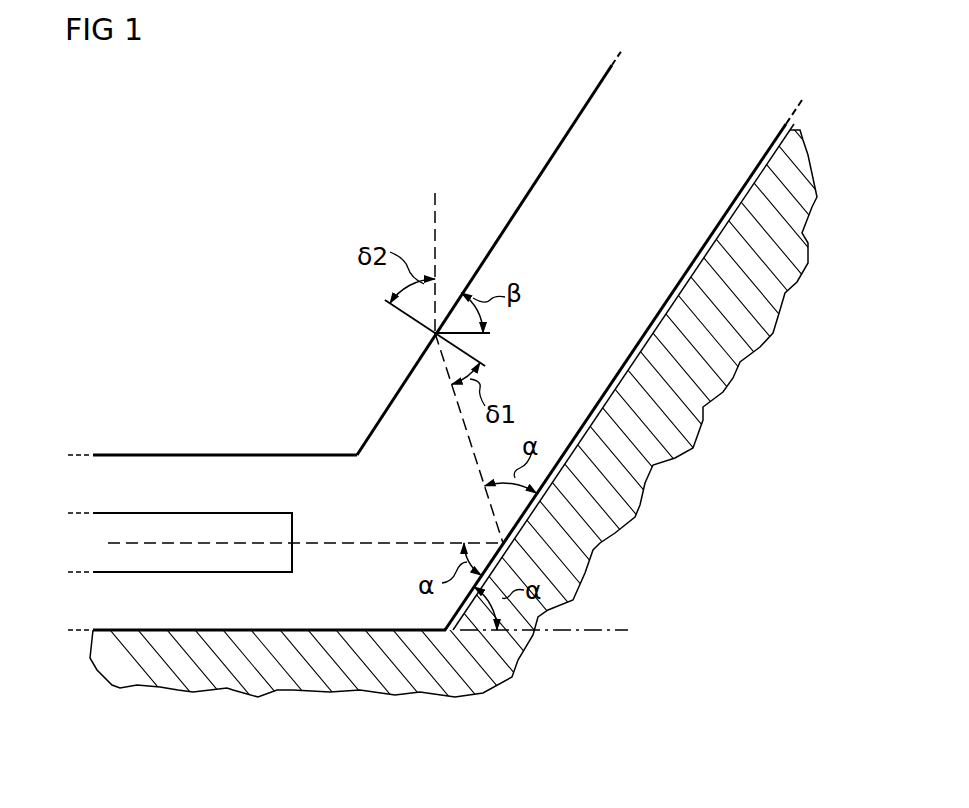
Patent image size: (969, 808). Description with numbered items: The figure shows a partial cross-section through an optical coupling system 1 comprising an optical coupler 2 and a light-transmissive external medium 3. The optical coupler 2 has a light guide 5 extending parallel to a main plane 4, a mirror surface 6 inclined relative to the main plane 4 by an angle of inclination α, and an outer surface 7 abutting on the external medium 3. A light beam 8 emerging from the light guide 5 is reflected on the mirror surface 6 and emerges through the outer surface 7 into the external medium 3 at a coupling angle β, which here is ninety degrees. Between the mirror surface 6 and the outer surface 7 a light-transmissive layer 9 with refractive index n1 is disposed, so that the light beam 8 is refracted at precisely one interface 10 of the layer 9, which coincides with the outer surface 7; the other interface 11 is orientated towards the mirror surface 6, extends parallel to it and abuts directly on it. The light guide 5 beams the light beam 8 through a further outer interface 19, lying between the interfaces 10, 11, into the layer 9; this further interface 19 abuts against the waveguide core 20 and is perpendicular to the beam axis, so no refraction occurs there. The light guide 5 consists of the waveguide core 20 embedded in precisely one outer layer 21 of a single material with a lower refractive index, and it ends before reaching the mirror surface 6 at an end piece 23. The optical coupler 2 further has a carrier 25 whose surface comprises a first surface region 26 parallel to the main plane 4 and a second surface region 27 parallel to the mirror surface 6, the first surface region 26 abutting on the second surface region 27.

The optical coupling system 1 is at (230, 98).
The optical coupler 2 is at (194, 396).
The light-transmissive external medium 3 is at (302, 233).
The main plane 4 is at (586, 632).
The light guide 5 is at (134, 450).
The mirror surface 6 is at (623, 365).
The outer surface 7 is at (413, 364).
The light beam 8 is at (386, 538).
The light-transmissive layer 9 is at (468, 259).
The interface 10 is at (475, 252).
The interface 11 is at (623, 365).
The further outer interface 19 is at (294, 552).
The waveguide core 20 is at (211, 528).
The outer layer 21 is at (256, 464).
The end piece 23 is at (223, 421).
The carrier 25 is at (739, 337).
The first surface region 26 is at (246, 624).
The second surface region 27 is at (680, 284).